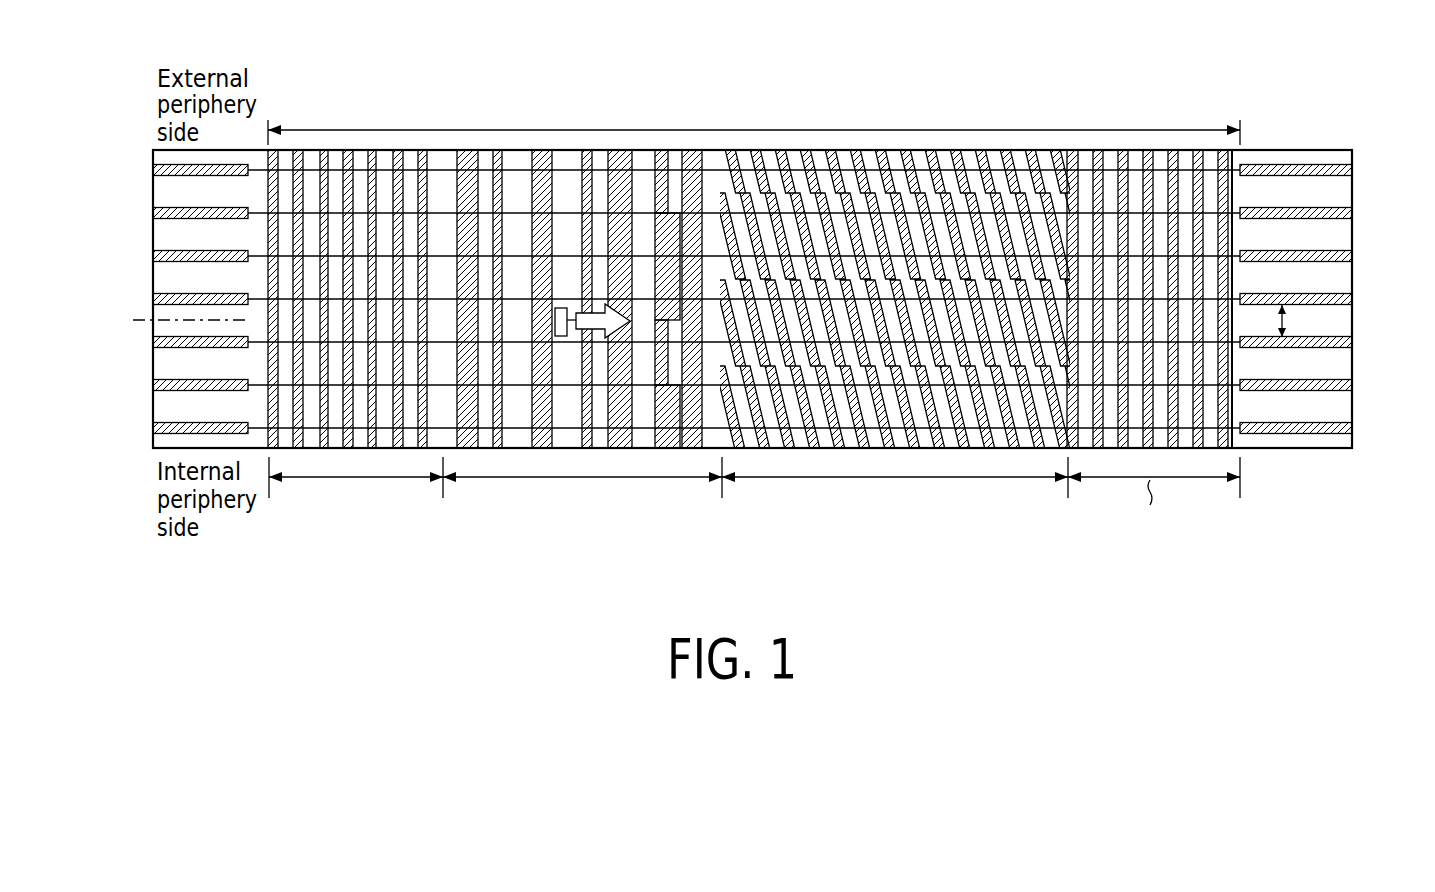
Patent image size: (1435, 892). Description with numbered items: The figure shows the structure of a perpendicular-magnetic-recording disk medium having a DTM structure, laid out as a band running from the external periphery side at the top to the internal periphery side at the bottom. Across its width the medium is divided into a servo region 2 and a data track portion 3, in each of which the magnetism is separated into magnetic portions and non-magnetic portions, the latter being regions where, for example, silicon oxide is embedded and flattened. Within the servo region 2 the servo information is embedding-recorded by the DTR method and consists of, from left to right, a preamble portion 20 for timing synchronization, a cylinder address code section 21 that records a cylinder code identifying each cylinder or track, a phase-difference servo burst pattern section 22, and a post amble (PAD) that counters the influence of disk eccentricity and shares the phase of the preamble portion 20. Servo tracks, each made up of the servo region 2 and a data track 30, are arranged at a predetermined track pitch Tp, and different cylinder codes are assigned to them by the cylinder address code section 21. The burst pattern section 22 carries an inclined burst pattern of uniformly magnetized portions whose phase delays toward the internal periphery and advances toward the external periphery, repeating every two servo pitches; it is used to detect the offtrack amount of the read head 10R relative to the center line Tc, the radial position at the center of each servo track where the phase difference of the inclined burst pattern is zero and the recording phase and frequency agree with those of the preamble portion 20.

The servo region 2 is at (728, 128).
The data track portion 3 is at (1298, 480).
The read head 10R is at (556, 308).
The preamble portion 20 is at (348, 480).
The cylinder address code section 21 is at (607, 480).
The phase-difference servo burst pattern section 22 is at (857, 480).
The data track 30 is at (1352, 282).
The center line Tc is at (173, 322).
The track pitch Tp is at (1283, 320).